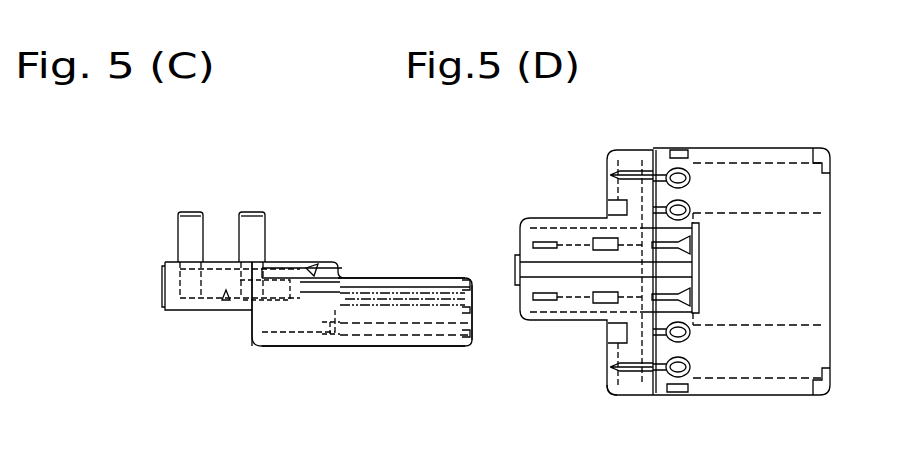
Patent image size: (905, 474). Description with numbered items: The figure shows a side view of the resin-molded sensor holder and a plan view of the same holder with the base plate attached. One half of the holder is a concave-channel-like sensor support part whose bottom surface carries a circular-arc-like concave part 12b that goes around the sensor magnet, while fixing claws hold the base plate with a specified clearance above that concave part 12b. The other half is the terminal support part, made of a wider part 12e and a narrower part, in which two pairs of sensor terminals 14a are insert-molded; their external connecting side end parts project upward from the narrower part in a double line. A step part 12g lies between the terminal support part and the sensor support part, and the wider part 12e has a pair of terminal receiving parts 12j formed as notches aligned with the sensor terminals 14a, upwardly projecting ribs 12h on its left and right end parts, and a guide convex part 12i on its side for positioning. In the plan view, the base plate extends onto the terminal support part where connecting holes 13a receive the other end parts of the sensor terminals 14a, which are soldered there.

The circular-arc-like concave part 12b is at (437, 350).
The wider part 12e is at (288, 330).
The step part 12g is at (318, 343).
The ribs 12h is at (625, 167).
The guide convex part 12i is at (375, 310).
The terminal receiving parts 12j is at (312, 263).
The connecting holes 13a is at (698, 167).
The sensor terminals 14a is at (222, 304).